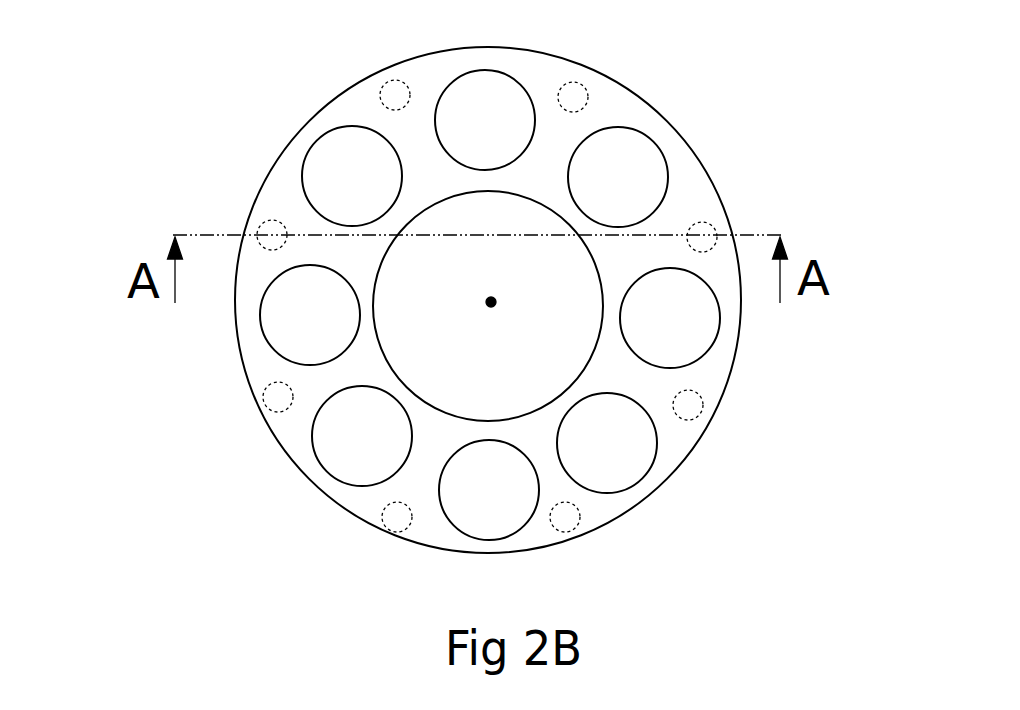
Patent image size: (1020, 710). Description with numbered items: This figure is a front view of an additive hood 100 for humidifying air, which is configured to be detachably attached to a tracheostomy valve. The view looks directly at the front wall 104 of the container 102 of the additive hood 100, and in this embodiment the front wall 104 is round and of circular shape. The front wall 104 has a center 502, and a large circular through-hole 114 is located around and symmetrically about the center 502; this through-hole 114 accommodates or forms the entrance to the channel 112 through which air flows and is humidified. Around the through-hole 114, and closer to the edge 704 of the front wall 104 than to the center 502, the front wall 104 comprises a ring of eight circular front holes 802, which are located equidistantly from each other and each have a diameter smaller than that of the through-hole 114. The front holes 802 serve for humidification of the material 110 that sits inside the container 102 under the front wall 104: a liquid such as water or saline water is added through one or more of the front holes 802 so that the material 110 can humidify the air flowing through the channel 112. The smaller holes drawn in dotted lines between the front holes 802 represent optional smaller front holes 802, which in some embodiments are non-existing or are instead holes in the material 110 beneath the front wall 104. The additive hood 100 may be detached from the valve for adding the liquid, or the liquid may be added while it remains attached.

The additive hood 100 is at (454, 280).
The container 102 is at (489, 280).
The material 110 is at (502, 280).
The front wall 104 is at (502, 287).
The edge 704 is at (318, 493).
The channel 112 is at (585, 405).
The through-hole 114 is at (513, 383).
The center 502 is at (491, 302).
The front hole 802 is at (315, 168).